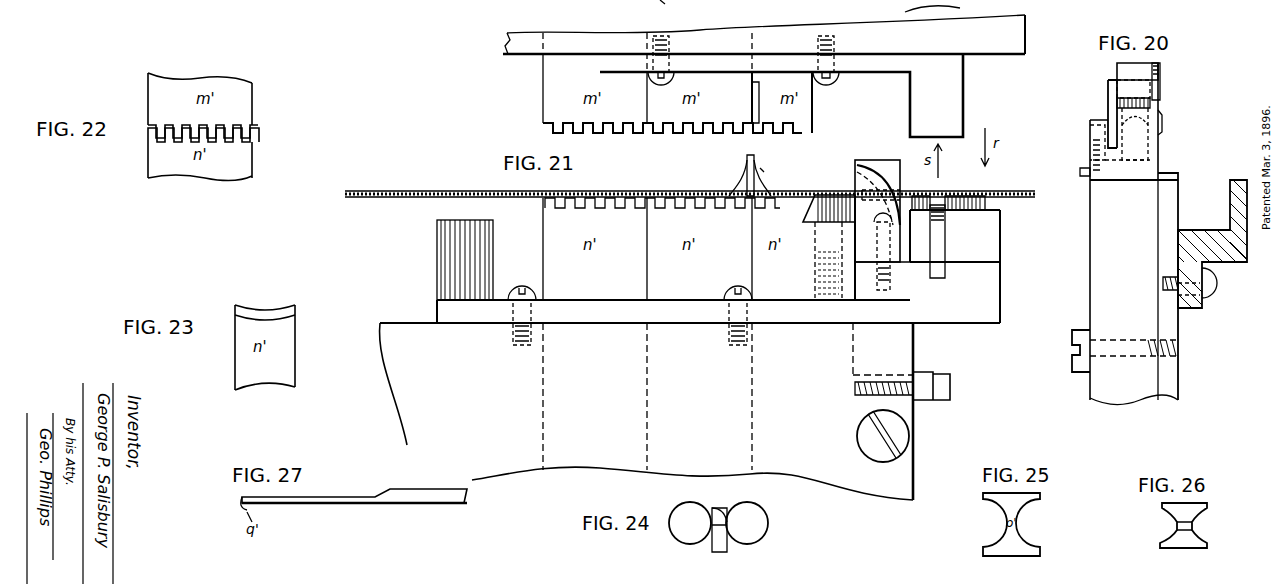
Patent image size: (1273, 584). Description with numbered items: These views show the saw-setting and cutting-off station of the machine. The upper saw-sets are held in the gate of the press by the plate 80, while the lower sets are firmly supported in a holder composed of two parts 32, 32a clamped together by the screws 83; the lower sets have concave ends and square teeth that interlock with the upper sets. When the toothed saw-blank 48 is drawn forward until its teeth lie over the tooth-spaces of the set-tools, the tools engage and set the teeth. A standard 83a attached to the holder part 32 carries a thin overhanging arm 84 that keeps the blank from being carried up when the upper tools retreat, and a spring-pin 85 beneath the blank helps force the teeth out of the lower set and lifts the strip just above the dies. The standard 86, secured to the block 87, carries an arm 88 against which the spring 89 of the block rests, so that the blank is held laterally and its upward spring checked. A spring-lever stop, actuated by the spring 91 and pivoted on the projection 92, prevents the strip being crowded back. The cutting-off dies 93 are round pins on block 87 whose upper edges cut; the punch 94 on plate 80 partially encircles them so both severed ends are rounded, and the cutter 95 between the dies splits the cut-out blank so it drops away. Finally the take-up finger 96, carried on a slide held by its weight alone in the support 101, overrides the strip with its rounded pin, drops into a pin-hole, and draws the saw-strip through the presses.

In FIG. 21, the plate 80 is at (764, 34).
In FIG. 21, the cutting-off punch 94 is at (781, 95).
In FIG. 25, the cutting-off punch 94 is at (1041, 498).
In FIG. 21, the spring 91 is at (662, 0).
In FIG. 21, the standard 86 is at (820, 145).
In FIG. 20, the standard 86 is at (1106, 89).
In FIG. 21, the screws 83 is at (857, 437).
In FIG. 20, the screws 83 is at (1078, 330).
In FIG. 21, the saw-blank 48 is at (446, 196).
In FIG. 21, the projection 92 is at (494, 262).
In FIG. 21, the block 87 is at (718, 277).
In FIG. 20, the block 87 is at (1115, 150).
In FIG. 21, the holder part 32 is at (665, 411).
In FIG. 20, the holder part 32 is at (1134, 292).
In FIG. 21, the spring-pin 85 is at (815, 212).
In FIG. 21, the arm 88 is at (853, 173).
In FIG. 20, the arm 88 is at (1133, 89).
In FIG. 21, the spring 89 is at (892, 165).
In FIG. 20, the spring 89 is at (1160, 83).
In FIG. 21, the cutting-off dies 93 is at (940, 204).
In FIG. 20, the cutting-off dies 93 is at (1117, 102).
In FIG. 24, the cutting-off dies 93 is at (718, 523).
In FIG. 21, the cutter 95 is at (945, 217).
In FIG. 20, the cutter 95 is at (1145, 112).
In FIG. 24, the cutter 95 is at (723, 505).
In FIG. 21, the overhanging arm 84 is at (756, 162).
In FIG. 20, the overhanging arm 84 is at (1125, 70).
In FIG. 21, the standard 83a is at (764, 172).
In FIG. 20, the standard 83a is at (1162, 72).
In FIG. 27, the take-up finger 96 is at (343, 505).
In FIG. 20, the slide support 101 is at (1246, 240).
In FIG. 20, the holder part 32a is at (1180, 207).